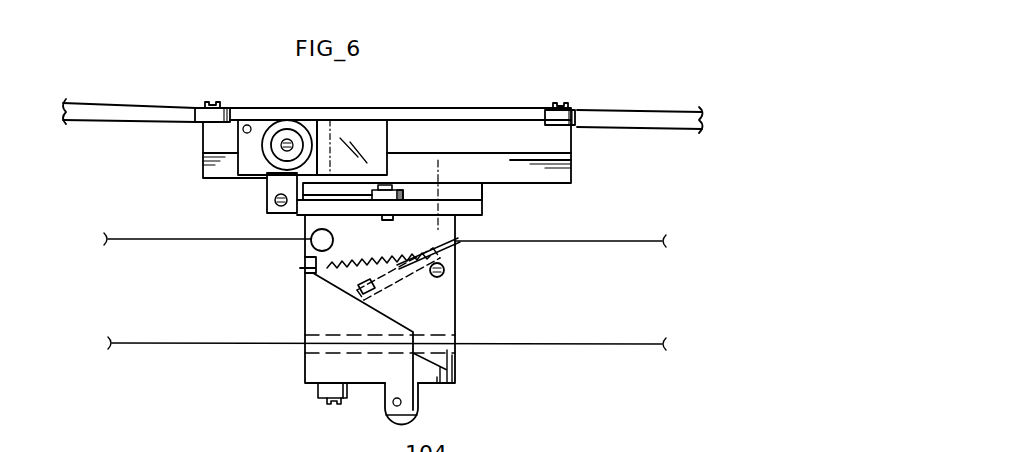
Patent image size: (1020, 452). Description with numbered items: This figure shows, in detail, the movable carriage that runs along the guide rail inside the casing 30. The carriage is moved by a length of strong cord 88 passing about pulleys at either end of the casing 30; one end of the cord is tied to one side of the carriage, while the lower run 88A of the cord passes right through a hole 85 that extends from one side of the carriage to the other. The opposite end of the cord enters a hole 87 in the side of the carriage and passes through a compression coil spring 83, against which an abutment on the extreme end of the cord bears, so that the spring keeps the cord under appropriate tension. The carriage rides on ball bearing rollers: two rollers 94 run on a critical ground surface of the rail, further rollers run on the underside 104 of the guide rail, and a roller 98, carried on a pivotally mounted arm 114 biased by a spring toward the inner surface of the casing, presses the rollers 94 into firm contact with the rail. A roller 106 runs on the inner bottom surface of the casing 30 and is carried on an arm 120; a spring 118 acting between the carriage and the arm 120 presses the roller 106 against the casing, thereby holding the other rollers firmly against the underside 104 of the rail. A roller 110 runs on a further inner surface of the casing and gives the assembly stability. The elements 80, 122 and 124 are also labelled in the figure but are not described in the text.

The guide rail 80 is at (652, 111).
The underside of the guide rail 104 is at (686, 126).
The rollers 94 is at (196, 110).
The roller 98 is at (402, 192).
The cord 88 is at (592, 240).
The lower run of the cord 88A is at (612, 346).
The pivotally mounted arm 114 is at (317, 206).
The spring 118 is at (373, 262).
The hole 87 is at (460, 240).
The compression coil spring 83 is at (386, 293).
The arm 120 is at (336, 333).
The hole 85 is at (453, 363).
The roller 110 is at (318, 395).
The roller 106 is at (412, 418).
The casing 30 is at (344, 445).
The support 122 is at (518, 441).
The support 124 is at (576, 444).